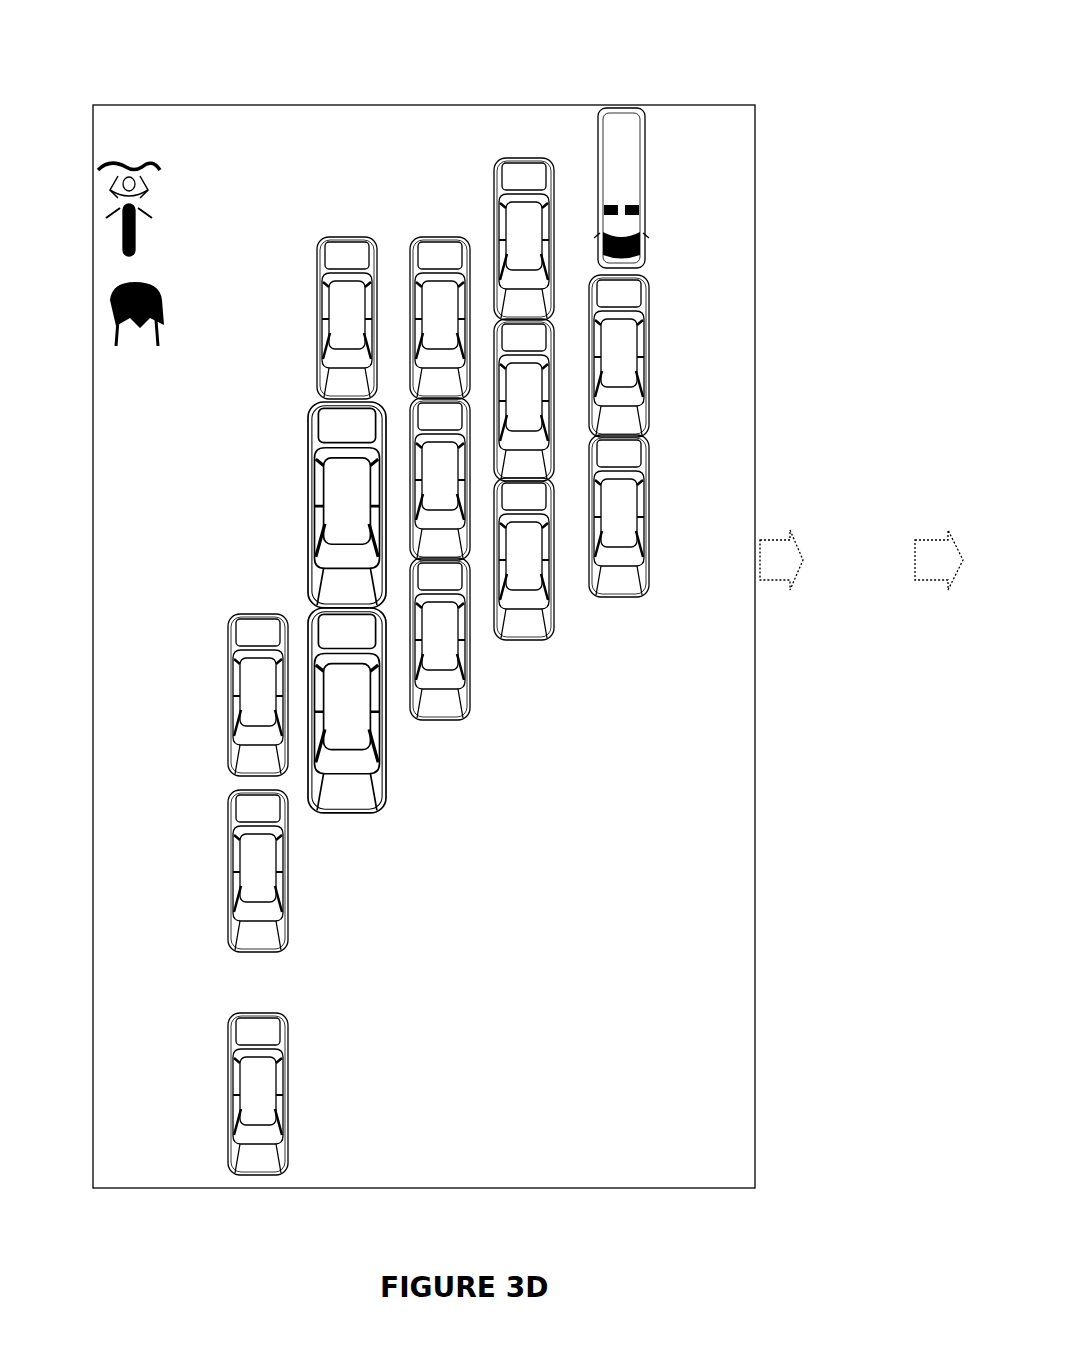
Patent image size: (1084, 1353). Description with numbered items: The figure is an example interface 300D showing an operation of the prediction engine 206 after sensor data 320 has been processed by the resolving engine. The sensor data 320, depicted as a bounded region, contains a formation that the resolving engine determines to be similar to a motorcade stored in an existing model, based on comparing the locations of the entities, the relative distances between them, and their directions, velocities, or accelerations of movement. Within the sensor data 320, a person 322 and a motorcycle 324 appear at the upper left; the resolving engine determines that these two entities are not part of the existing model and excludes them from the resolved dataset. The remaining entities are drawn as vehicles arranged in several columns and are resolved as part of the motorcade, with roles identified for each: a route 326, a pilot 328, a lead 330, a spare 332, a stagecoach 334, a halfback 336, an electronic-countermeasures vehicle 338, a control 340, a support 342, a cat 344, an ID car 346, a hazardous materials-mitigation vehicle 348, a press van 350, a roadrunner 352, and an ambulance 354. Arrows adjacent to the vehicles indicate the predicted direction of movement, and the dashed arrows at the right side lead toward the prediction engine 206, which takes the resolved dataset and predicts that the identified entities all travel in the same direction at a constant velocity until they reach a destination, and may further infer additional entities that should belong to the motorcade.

The example interface 300D is at (204, 40).
The sensor data 320 is at (238, 104).
The person 322 is at (104, 314).
The motorcycle 324 is at (124, 150).
The route 326 is at (256, 1097).
The pilot 328 is at (256, 870).
The lead 330 is at (256, 697).
The spare 332 is at (355, 800).
The stagecoach 334 is at (326, 497).
The halfback 336 is at (352, 250).
The electronic-countermeasures vehicle 338 is at (443, 700).
The control 340 is at (440, 479).
The support 342 is at (440, 318).
The cat 344 is at (522, 618).
The ID car 346 is at (524, 400).
The hazardous materials-mitigation vehicle 348 is at (524, 239).
The press van 350 is at (622, 572).
The roadrunner 352 is at (619, 356).
The ambulance 354 is at (632, 222).
The prediction engine 206 is at (861, 560).